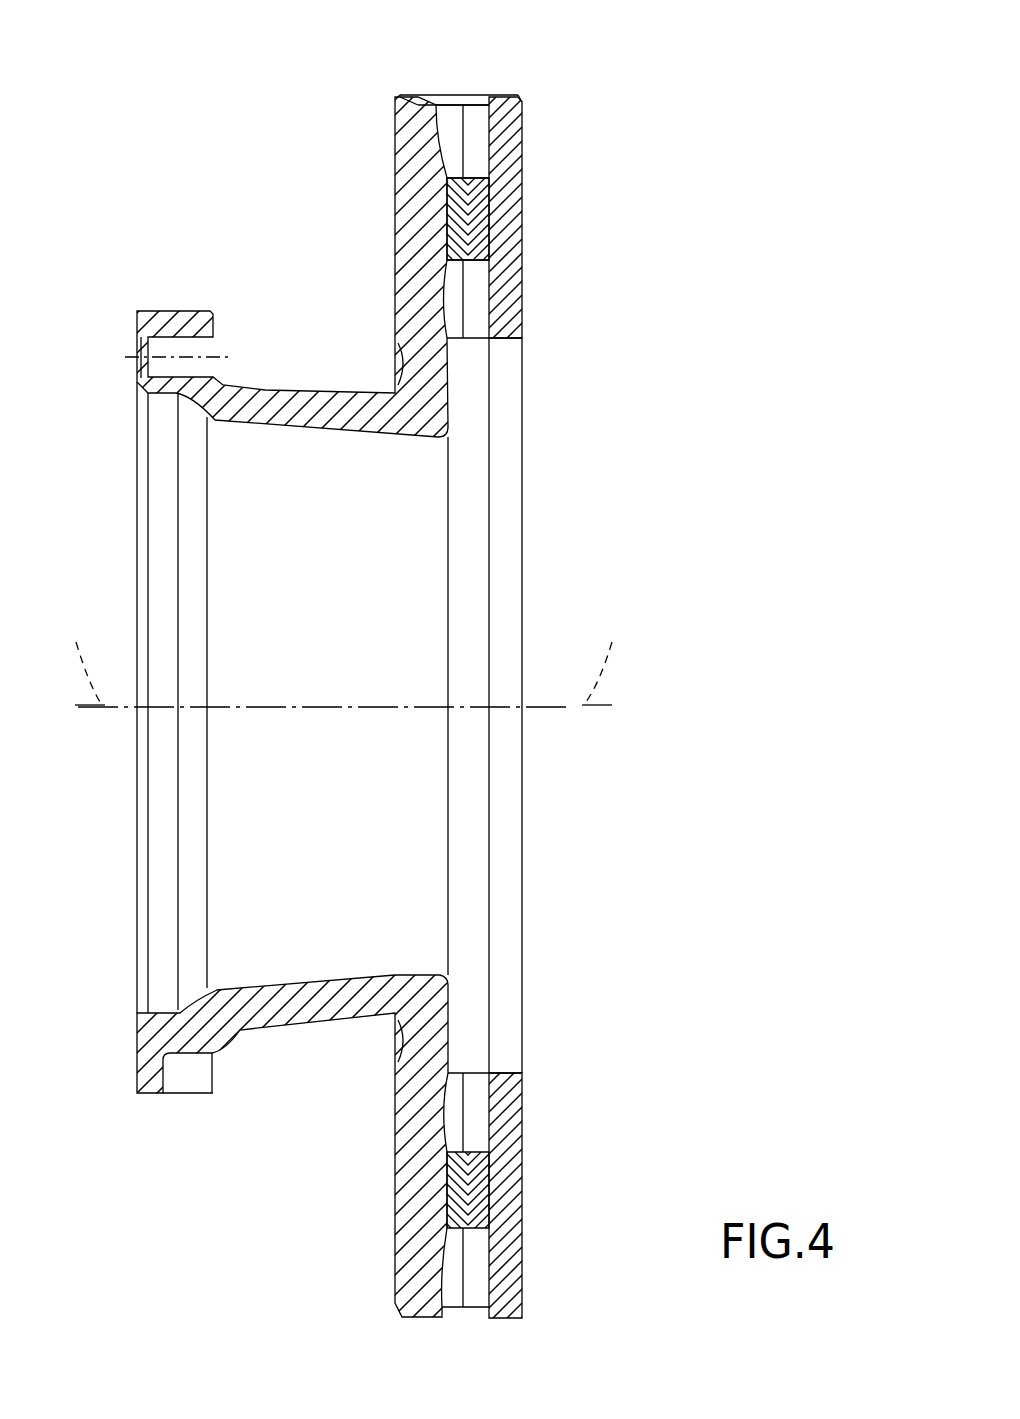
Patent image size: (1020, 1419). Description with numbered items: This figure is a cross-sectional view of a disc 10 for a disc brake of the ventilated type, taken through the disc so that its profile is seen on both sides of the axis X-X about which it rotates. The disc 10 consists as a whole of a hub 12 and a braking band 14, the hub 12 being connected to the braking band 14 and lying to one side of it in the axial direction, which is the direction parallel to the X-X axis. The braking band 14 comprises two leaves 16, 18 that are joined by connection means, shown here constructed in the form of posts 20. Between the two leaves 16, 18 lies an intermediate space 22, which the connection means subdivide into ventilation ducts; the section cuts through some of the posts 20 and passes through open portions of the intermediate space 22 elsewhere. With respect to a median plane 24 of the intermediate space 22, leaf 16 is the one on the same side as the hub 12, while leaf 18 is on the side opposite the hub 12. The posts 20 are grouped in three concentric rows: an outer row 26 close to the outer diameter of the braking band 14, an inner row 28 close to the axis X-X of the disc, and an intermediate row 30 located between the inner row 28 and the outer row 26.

The disc 10 is at (588, 126).
The hub 12 is at (265, 386).
The braking band 14 is at (526, 212).
The leaf 16 is at (402, 118).
The leaf 18 is at (512, 286).
The posts 20 is at (478, 120).
The intermediate space 22 is at (462, 122).
The median plane 24 is at (525, 340).
The outer row 26 is at (445, 155).
The inner row 28 is at (460, 308).
The intermediate row 30 is at (460, 243).